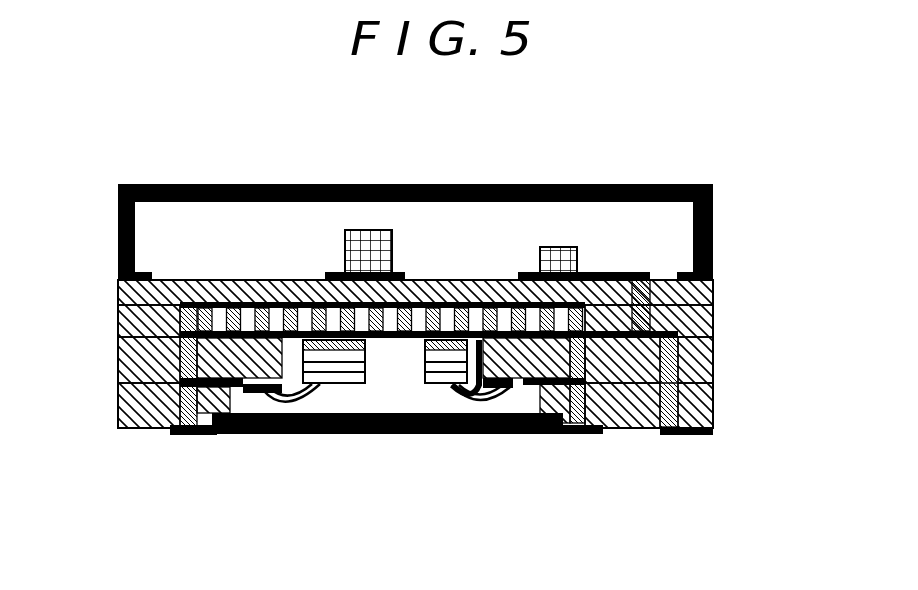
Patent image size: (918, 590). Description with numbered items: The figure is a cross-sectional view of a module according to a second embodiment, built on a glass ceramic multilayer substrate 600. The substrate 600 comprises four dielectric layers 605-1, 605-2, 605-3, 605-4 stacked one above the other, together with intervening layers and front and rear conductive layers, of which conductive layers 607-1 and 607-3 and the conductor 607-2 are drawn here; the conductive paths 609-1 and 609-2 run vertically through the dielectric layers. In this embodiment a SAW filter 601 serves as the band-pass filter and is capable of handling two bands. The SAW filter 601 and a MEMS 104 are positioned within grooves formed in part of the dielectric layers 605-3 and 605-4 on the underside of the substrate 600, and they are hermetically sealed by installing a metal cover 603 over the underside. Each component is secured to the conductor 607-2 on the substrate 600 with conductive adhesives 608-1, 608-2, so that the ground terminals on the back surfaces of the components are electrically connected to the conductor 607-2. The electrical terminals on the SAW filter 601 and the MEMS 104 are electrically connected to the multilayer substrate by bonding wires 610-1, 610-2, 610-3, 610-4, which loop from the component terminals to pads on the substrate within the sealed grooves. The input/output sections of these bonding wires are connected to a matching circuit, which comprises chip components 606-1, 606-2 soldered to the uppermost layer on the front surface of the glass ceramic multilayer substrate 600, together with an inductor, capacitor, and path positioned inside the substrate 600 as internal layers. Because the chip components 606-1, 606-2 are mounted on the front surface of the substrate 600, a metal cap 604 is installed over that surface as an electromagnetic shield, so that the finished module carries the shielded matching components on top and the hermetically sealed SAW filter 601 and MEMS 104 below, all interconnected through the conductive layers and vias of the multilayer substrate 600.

The glass ceramic multilayer substrate 600 is at (107, 277).
The SAW filter 601 is at (340, 383).
The MEMS 104 is at (437, 383).
The metal cover 603 is at (407, 435).
The metal cap 604 is at (281, 184).
The dielectric layer 605-1 is at (703, 293).
The dielectric layer 605-2 is at (708, 327).
The dielectric layer 605-3 is at (707, 365).
The dielectric layer 605-4 is at (707, 398).
The chip component 606-1 is at (388, 232).
The chip component 606-2 is at (577, 258).
The conductive layer 607-1 is at (578, 435).
The conductor 607-2 is at (150, 430).
The conductive layer 607-3 is at (300, 302).
The conductive adhesive 608-1 is at (418, 290).
The conductive adhesive 608-2 is at (465, 297).
The via conductor 609-1 is at (212, 322).
The via conductor 609-2 is at (620, 402).
The bonding wire 610-1 is at (252, 405).
The bonding wire 610-2 is at (290, 407).
The bonding wire 610-3 is at (517, 435).
The bonding wire 610-4 is at (495, 435).